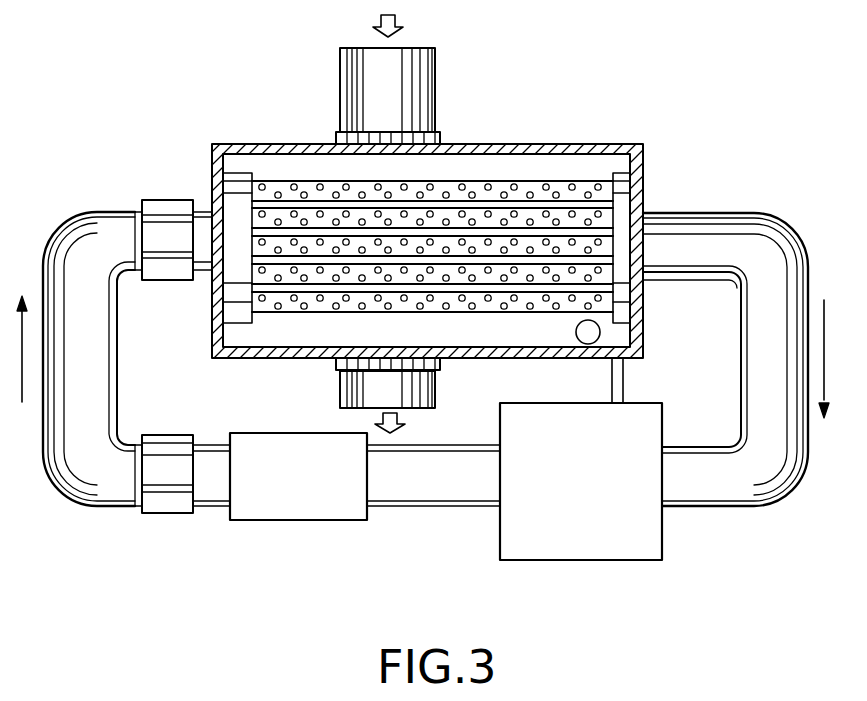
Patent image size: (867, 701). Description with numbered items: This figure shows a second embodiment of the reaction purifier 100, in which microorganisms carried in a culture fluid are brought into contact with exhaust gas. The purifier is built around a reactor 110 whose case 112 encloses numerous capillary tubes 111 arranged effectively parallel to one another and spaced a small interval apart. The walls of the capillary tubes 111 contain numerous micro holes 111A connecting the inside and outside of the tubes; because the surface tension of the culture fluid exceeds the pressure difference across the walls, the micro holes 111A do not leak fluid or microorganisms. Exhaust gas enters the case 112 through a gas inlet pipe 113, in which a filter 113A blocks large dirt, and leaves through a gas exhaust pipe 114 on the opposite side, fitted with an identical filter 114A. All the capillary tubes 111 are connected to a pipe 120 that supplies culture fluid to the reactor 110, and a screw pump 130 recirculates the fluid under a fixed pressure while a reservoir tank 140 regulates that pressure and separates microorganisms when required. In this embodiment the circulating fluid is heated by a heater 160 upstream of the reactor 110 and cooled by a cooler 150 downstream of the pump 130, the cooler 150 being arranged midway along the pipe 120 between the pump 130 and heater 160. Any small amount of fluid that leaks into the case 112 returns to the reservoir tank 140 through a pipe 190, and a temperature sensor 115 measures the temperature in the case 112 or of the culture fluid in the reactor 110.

The reaction purifier 100 is at (152, 106).
The reactor 110 is at (653, 172).
The capillary tubes 111 is at (612, 185).
The micro holes 111A is at (557, 190).
The case 112 is at (243, 143).
The gas inlet pipe 113 is at (437, 72).
The filter 113A is at (343, 135).
The gas exhaust pipe 114 is at (340, 375).
The filter 114A is at (438, 372).
The temperature sensor 115 is at (601, 332).
The pipe 120 is at (90, 470).
The screw pump 130 is at (300, 522).
The reservoir tank 140 is at (612, 560).
The cooler 150 is at (167, 473).
The heater 160 is at (164, 228).
The pipe 190 is at (625, 380).